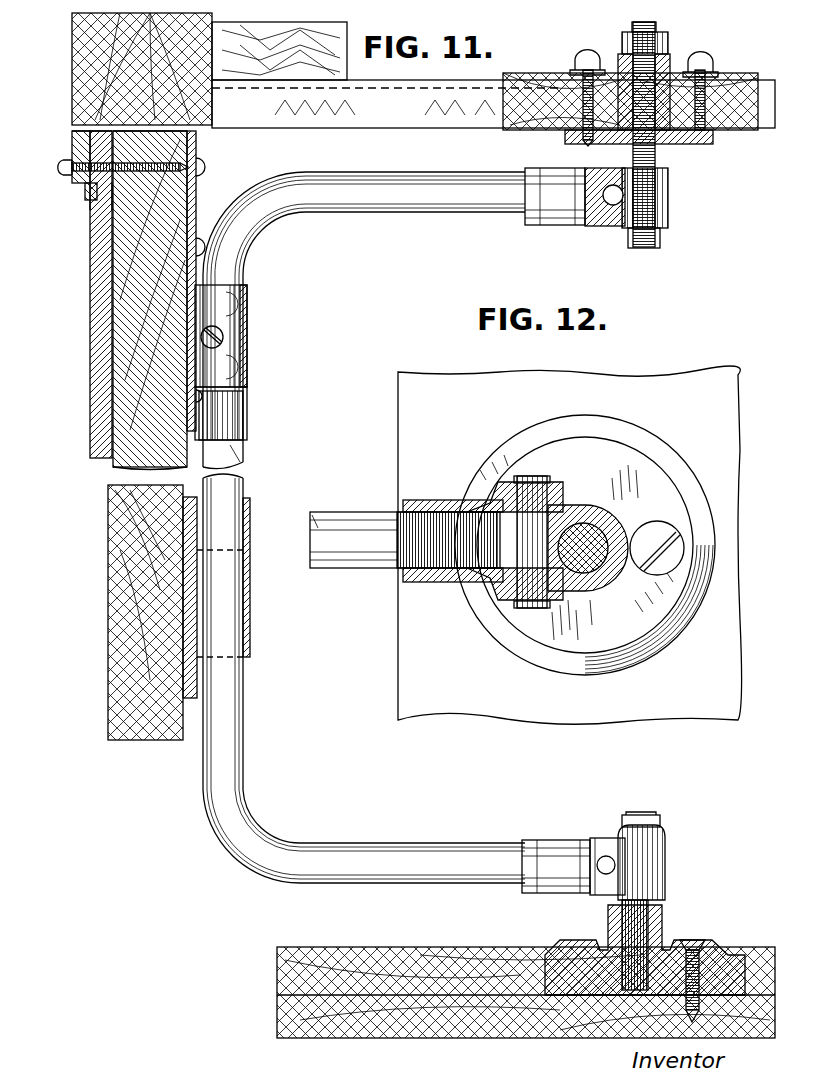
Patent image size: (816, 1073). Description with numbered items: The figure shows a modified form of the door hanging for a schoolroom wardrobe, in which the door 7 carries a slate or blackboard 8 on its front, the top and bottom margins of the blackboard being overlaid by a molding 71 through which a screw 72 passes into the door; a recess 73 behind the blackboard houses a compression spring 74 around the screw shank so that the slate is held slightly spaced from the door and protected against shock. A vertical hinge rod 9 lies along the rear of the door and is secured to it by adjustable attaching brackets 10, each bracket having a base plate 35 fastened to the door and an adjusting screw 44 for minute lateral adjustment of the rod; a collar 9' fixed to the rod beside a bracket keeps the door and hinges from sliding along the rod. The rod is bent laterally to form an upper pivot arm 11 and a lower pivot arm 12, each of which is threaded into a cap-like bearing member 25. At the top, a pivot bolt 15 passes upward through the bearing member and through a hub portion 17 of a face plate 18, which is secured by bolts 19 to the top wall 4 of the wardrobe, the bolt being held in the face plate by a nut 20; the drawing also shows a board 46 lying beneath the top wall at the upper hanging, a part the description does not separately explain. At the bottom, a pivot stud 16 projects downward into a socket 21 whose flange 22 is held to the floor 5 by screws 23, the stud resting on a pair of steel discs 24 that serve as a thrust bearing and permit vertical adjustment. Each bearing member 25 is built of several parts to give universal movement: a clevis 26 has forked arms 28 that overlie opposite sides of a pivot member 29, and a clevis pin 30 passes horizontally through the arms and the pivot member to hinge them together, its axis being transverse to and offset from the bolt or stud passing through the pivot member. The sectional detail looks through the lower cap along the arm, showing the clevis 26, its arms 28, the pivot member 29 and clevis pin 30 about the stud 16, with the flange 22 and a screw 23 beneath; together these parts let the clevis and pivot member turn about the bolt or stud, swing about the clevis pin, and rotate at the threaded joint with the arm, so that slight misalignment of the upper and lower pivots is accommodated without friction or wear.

In FIG. 11, the top wall 4 is at (345, 72).
In FIG. 11, the board 46 is at (255, 118).
In FIG. 11, the upper pivot arm 11 is at (365, 200).
In FIG. 11, the molding 71 is at (72, 140).
In FIG. 11, the screw 72 is at (63, 167).
In FIG. 11, the compression spring 74 is at (85, 190).
In FIG. 11, the recess 73 is at (95, 205).
In FIG. 11, the slate 8 is at (95, 262).
In FIG. 11, the base plate 35 is at (190, 318).
In FIG. 12, the base plate 35 is at (183, 665).
In FIG. 11, the door 7 is at (160, 348).
In FIG. 12, the door 7 is at (145, 612).
In FIG. 11, the adjusting screw 44 is at (218, 336).
In FIG. 11, the attaching bracket 10 is at (242, 358).
In FIG. 12, the attaching bracket 10 is at (257, 620).
In FIG. 11, the collar 9' is at (240, 413).
In FIG. 12, the collar 9' is at (242, 541).
In FIG. 11, the nut 20 is at (622, 42).
In FIG. 11, the bolt 19 is at (578, 58).
In FIG. 11, the hub portion 17 is at (670, 72).
In FIG. 11, the face plate 18 is at (713, 140).
In FIG. 11, the pivot bolt 15 is at (656, 165).
In FIG. 11, the forked arms 28 is at (610, 170).
In FIG. 12, the forked arms 28 is at (505, 480).
In FIG. 11, the pivot member 29 is at (668, 212).
In FIG. 12, the pivot member 29 is at (572, 495).
In FIG. 11, the bearing member 25 is at (565, 234).
In FIG. 12, the bearing member 25 is at (546, 833).
In FIG. 11, the clevis pin 30 is at (613, 205).
In FIG. 12, the clevis pin 30 is at (532, 600).
In FIG. 12, the clevis 26 is at (440, 505).
In FIG. 12, the lower pivot arm 12 is at (349, 556).
In FIG. 12, the pivot stud 16 is at (592, 562).
In FIG. 12, the screw 23 is at (682, 565).
In FIG. 12, the flange 22 is at (660, 620).
In FIG. 12, the floor 5 is at (650, 700).
In FIG. 12, the hinge rod 9 is at (239, 632).
In FIG. 12, the steel discs 24 is at (662, 940).
In FIG. 12, the socket 21 is at (635, 995).